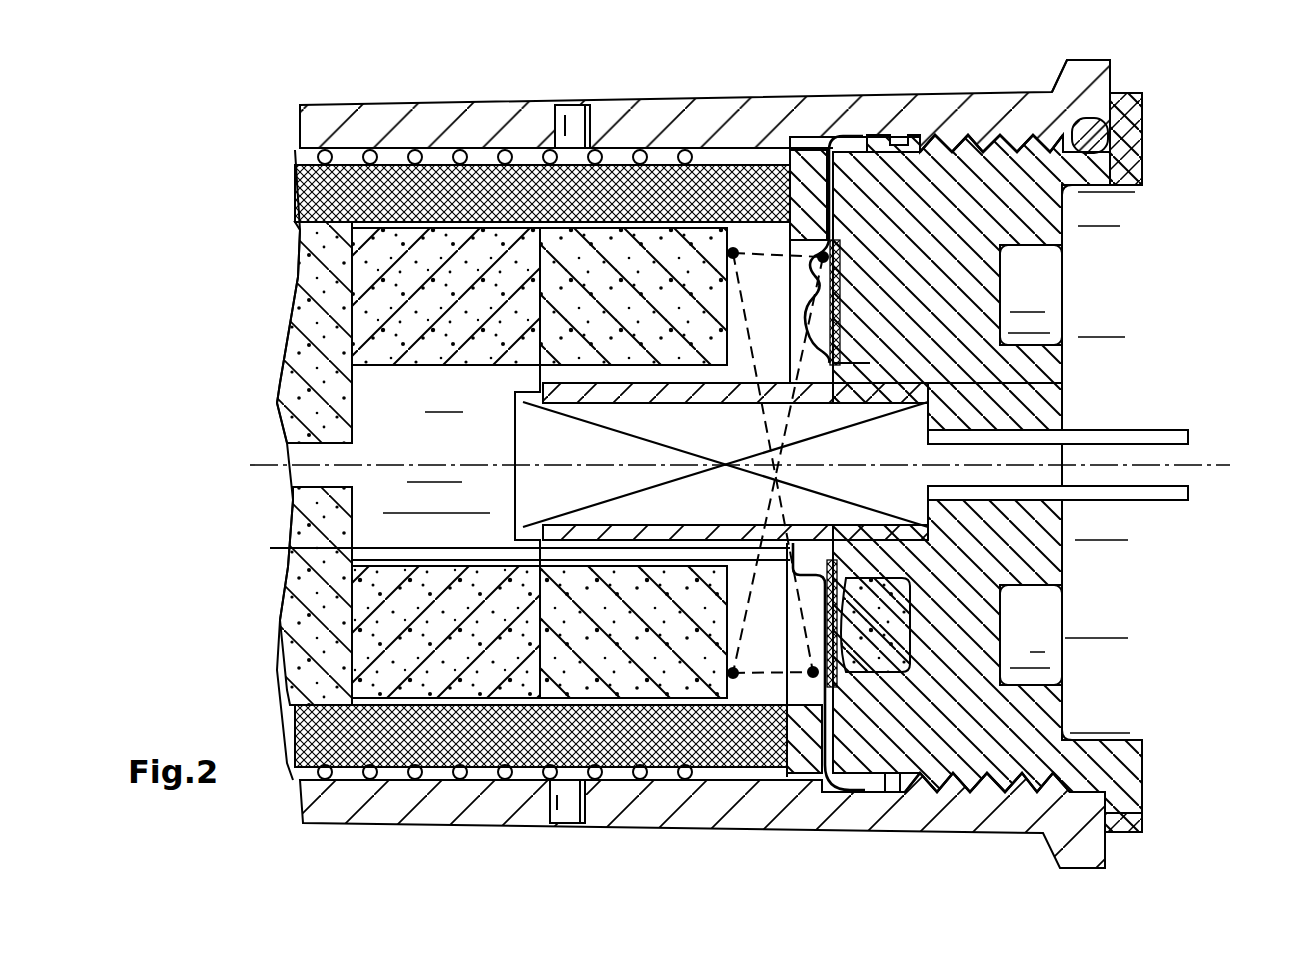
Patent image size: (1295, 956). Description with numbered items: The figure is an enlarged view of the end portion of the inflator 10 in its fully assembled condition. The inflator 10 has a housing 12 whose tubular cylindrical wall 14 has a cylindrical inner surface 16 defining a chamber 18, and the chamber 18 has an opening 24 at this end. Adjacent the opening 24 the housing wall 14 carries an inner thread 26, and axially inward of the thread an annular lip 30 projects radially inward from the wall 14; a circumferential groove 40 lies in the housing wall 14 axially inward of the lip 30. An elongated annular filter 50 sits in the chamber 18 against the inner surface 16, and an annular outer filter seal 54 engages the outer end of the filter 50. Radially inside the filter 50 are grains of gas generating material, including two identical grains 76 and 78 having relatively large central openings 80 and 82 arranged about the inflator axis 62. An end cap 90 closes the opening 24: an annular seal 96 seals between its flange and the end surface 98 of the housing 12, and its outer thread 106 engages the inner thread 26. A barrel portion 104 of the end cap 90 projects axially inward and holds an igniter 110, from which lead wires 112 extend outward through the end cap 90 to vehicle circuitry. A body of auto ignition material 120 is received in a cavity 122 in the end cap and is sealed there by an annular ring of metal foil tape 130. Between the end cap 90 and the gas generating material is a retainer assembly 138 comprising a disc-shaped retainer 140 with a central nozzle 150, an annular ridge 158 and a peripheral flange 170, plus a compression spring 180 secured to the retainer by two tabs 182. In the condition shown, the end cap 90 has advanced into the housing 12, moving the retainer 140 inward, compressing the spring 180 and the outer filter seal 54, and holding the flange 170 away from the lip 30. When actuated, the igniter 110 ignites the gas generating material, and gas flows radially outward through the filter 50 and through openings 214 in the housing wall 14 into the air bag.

The inflator 10 is at (228, 380).
The housing 12 is at (397, 825).
The tubular cylindrical wall 14 is at (457, 825).
The cylindrical inner surface 16 is at (398, 152).
The chamber 18 is at (662, 152).
The opening 24 is at (1115, 163).
The inner thread 26 is at (977, 790).
The annular lip 30 is at (892, 794).
The circumferential groove 40 is at (883, 137).
The filter 50 is at (355, 193).
The outer filter seal 54 is at (808, 770).
The inflator axis 62 is at (275, 465).
The grain of gas generating material 76 is at (397, 300).
The grain of gas generating material 78 is at (607, 622).
The central opening 80 is at (375, 383).
The central opening 82 is at (352, 548).
The end cap 90 is at (1066, 218).
The annular seal 96 is at (1097, 138).
The end surface 98 is at (1112, 82).
The barrel portion 104 is at (515, 400).
The outer thread 106 is at (974, 792).
The igniter 110 is at (552, 444).
The lead wires 112 is at (1158, 492).
The auto ignition material 120 is at (885, 633).
The cavity 122 is at (907, 588).
The metal foil tape 130 is at (838, 280).
The retainer assembly 138 is at (667, 767).
The retainer 140 is at (773, 683).
The nozzle 150 is at (800, 553).
The annular ridge 158 is at (779, 768).
The peripheral flange 170 is at (863, 134).
The compression spring 180 is at (736, 248).
The tabs 182 is at (799, 225).
The openings 214 is at (565, 125).